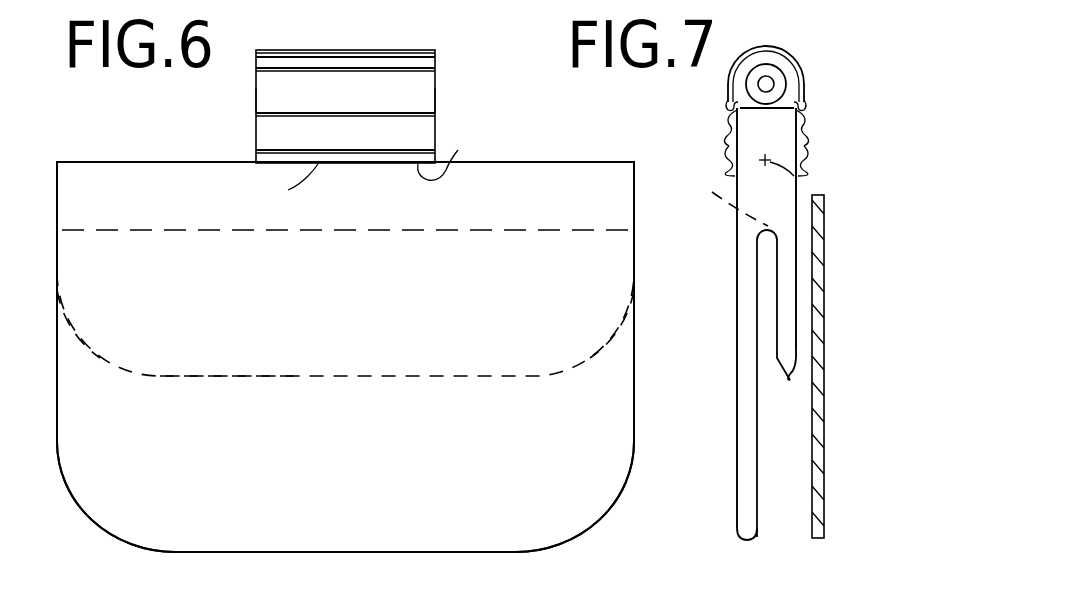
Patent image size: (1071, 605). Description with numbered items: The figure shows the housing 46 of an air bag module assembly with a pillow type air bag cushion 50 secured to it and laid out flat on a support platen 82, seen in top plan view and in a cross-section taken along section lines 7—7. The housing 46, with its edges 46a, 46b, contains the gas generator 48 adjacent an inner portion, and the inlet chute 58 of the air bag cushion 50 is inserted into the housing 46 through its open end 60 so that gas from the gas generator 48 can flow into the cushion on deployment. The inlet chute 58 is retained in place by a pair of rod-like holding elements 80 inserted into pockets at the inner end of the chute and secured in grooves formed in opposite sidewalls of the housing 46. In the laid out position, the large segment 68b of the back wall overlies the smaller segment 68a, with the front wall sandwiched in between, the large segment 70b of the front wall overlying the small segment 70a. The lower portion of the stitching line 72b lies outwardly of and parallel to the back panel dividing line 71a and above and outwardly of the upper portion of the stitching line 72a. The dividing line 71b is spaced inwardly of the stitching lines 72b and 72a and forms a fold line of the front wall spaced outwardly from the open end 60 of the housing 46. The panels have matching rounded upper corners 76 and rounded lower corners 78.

In FIG. 6, the section lines 7— 7 is at (384, 32).
In FIG. 6, the housing 46 is at (336, 50).
In FIG. 7, the housing 46 is at (790, 54).
In FIG. 6, the cassette left edge 46a is at (256, 90).
In FIG. 6, the cassette right edge 46b is at (437, 95).
In FIG. 7, the gas generator 48 is at (786, 84).
In FIG. 6, the air bag cushion 50 is at (115, 556).
In FIG. 7, the air bag cushion 50 is at (770, 512).
In FIG. 6, the inlet chute 58 is at (287, 184).
In FIG. 7, the inlet chute 58 is at (730, 130).
In FIG. 6, the open end of the housing 60 is at (451, 152).
In FIG. 7, the open end of the housing 60 is at (728, 168).
In FIG. 7, the upper segment of the back wall 68a is at (796, 258).
In FIG. 6, the lower segment of the back wall 68b is at (400, 418).
In FIG. 7, the lower segment of the back wall 68b is at (737, 354).
In FIG. 6, the small segment of the front wall 70a is at (160, 372).
In FIG. 7, the small segment of the front wall 70a is at (780, 316).
In FIG. 7, the large segment of the front wall 70b is at (758, 492).
In FIG. 6, the back panel dividing line 71a is at (525, 160).
In FIG. 7, the back panel dividing line 71a is at (725, 198).
In FIG. 6, the front wall dividing line 71b is at (100, 232).
In FIG. 7, the front wall dividing line 71b is at (806, 178).
In FIG. 6, the upper stitching line 72a is at (192, 378).
In FIG. 7, the upper stitching line 72a is at (790, 380).
In FIG. 6, the lower stitching line 72b is at (220, 553).
In FIG. 7, the lower stitching line 72b is at (748, 542).
In FIG. 6, the rounded upper corners 76 is at (85, 512).
In FIG. 6, the rounded lower corners 78 is at (102, 352).
In FIG. 7, the rod-like holding elements 80 is at (728, 102).
In FIG. 7, the support platen 82 is at (826, 490).